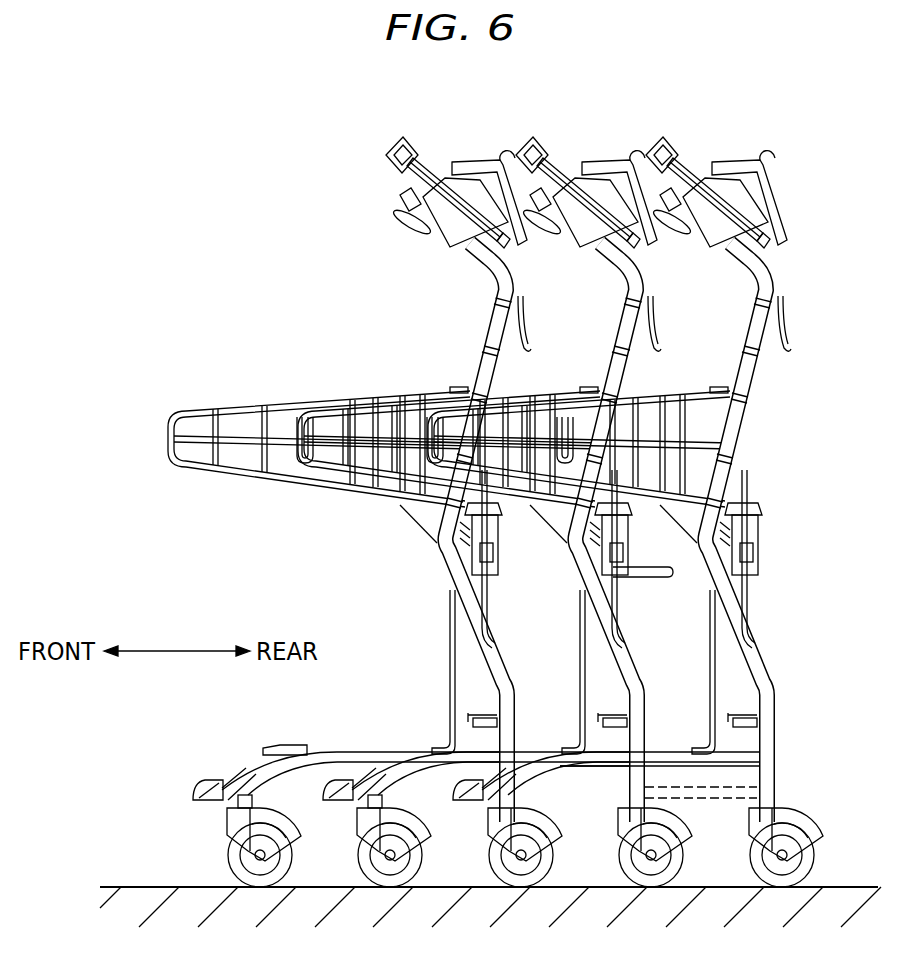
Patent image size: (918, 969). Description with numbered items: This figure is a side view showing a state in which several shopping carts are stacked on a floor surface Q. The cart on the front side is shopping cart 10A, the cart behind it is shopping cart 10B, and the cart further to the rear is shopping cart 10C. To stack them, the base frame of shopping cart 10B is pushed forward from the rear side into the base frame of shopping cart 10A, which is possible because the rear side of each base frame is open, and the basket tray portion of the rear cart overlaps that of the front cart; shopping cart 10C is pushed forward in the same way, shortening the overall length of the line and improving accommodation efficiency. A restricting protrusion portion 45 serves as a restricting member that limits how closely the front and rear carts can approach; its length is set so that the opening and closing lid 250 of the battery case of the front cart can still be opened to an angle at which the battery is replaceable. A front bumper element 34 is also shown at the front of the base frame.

The shopping cart 10A is at (497, 286).
The shopping cart 10B is at (582, 276).
The shopping cart 10C is at (584, 276).
The opening and closing lid 250 is at (643, 602).
The bumper 34 is at (213, 778).
The restricting protrusion portion 45 is at (727, 800).
The floor surface Q is at (848, 885).